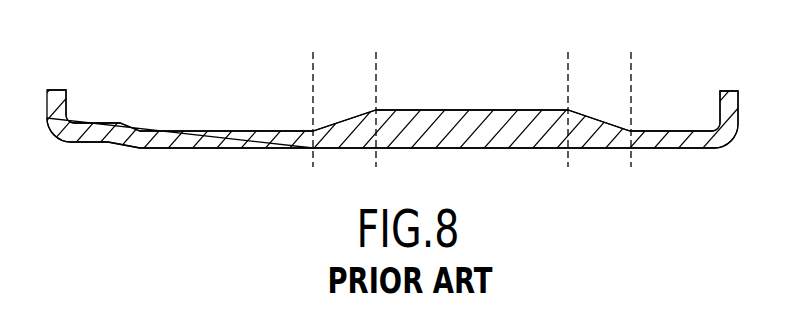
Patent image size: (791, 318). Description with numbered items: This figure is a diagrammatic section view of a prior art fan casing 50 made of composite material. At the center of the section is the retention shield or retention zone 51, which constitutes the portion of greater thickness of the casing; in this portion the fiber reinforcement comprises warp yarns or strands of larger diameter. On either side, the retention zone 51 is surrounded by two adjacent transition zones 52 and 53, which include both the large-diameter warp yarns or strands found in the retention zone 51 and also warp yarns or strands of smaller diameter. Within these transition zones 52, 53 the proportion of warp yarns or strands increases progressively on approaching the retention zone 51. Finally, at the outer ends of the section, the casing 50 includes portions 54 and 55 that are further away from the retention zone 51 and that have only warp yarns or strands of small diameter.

The fan casing 50 is at (222, 197).
The retention zone 51 is at (471, 102).
The transition zone 52 is at (600, 102).
The transition zone 53 is at (343, 102).
The casing portion 54 is at (199, 102).
The casing portion 55 is at (681, 102).